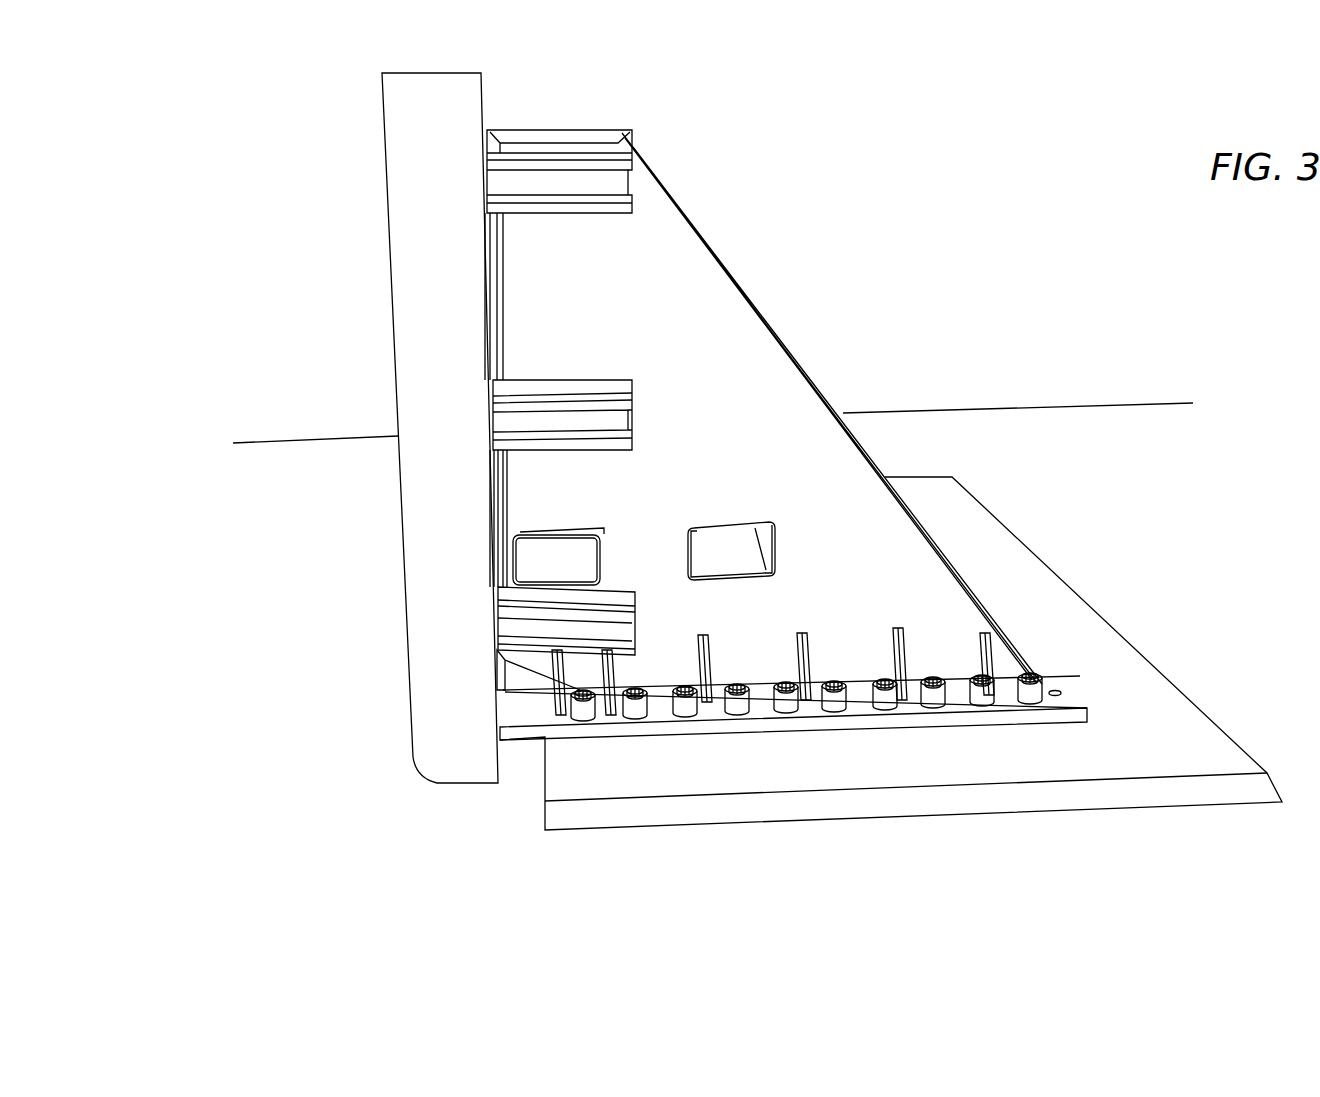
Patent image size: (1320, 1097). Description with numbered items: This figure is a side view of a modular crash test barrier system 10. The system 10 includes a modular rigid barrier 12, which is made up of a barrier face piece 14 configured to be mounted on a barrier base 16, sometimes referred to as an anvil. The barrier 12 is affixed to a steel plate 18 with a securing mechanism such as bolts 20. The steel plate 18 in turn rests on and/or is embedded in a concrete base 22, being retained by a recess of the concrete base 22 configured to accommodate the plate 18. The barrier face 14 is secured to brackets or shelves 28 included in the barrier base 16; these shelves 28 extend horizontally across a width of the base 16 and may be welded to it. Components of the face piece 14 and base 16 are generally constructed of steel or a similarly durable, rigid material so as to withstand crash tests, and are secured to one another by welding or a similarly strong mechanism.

The modular crash test barrier system 10 is at (962, 270).
The modular rigid barrier 12 is at (706, 226).
The barrier face piece 14 is at (450, 238).
The barrier base 16 is at (729, 441).
The steel plate 18 is at (1075, 761).
The bolts 20 is at (1036, 676).
The concrete base 22 is at (366, 618).
The shelves 28 is at (541, 180).